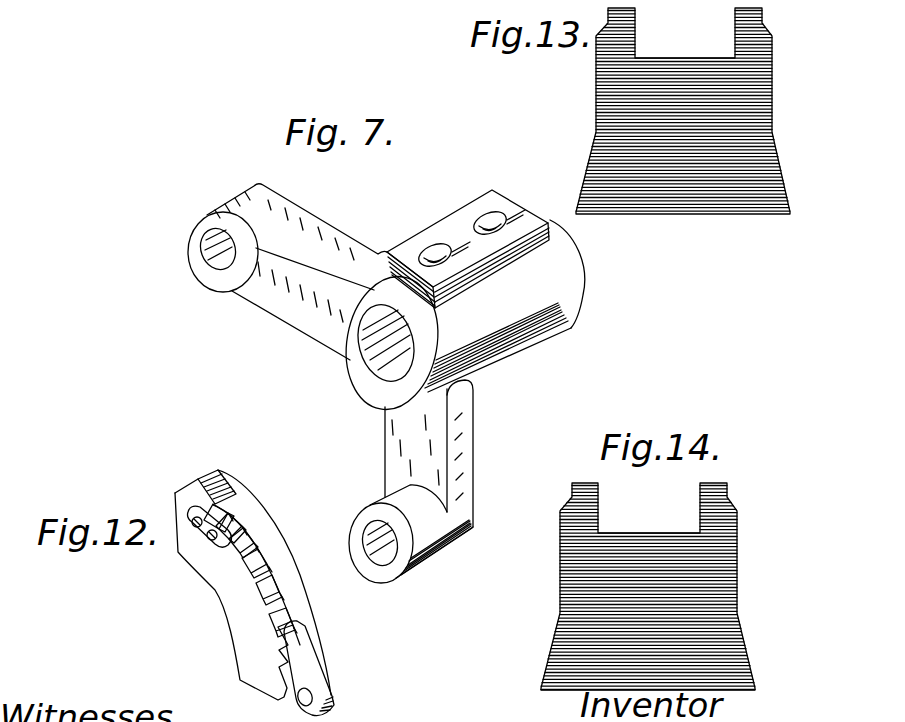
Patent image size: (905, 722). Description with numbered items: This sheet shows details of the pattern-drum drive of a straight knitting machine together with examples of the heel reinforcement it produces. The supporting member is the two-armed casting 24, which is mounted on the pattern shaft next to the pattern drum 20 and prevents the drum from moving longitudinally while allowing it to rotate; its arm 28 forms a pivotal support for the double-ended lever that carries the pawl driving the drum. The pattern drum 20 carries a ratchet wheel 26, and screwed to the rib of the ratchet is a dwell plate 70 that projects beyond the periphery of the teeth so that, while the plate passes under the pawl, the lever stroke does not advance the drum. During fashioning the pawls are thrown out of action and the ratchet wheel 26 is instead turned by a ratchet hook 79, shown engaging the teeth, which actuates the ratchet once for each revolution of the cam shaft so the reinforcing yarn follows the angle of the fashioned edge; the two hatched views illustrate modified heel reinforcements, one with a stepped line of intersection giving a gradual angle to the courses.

In FIG. 12, the pattern drum 20 is at (267, 524).
In FIG. 7, the two-armed casting 24 is at (412, 238).
In FIG. 12, the ratchet wheel 26 is at (232, 589).
In FIG. 7, the arm 28 is at (442, 438).
In FIG. 12, the dwell plate 70 is at (218, 540).
In FIG. 12, the ratchet hook 79 is at (307, 650).